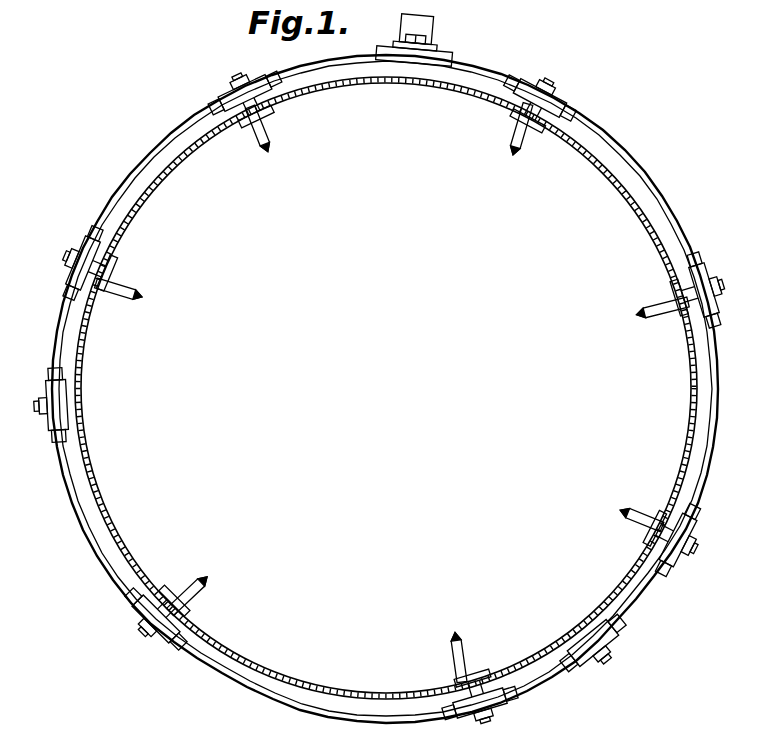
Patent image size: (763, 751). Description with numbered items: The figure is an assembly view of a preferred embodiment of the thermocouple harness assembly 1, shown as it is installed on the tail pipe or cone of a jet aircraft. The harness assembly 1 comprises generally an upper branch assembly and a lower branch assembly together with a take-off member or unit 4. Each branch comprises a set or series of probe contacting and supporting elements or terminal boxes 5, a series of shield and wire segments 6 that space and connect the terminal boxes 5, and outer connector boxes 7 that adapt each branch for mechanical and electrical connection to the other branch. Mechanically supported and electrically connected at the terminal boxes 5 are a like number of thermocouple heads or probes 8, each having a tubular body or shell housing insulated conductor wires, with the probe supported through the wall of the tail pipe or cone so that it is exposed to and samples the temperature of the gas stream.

The thermocouple harness assembly 1 is at (650, 164).
The take-off member or unit 4 is at (440, 40).
The terminal boxes 5 is at (224, 93).
The shield and wire segments 6 is at (127, 173).
The outer connector boxes 7 is at (45, 428).
The thermocouple heads or probes 8 is at (508, 150).